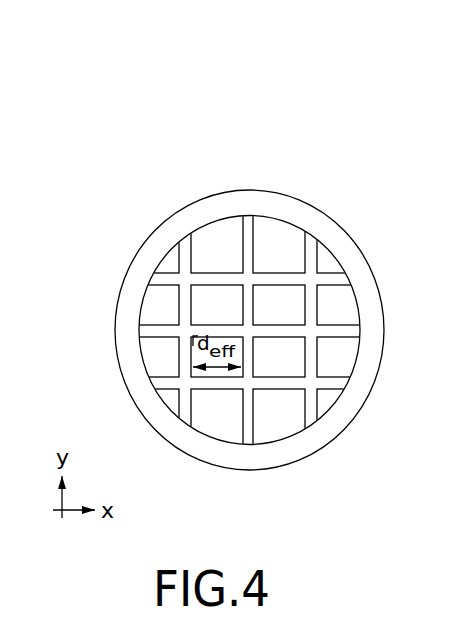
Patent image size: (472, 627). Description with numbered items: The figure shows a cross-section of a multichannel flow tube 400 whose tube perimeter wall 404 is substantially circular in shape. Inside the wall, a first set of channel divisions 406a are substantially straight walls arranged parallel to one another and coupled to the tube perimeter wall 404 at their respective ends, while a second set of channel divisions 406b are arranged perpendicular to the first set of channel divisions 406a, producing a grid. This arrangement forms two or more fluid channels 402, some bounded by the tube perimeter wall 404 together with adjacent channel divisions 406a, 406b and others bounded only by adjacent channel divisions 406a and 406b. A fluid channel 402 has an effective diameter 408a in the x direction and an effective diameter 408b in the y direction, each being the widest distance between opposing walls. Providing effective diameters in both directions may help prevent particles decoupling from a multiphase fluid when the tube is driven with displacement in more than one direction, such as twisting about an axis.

The multichannel flow tube 400 is at (180, 110).
The fluid channel 402 is at (187, 343).
The tube perimeter wall 404 is at (345, 237).
The first set of channel divisions 406a is at (252, 221).
The second set of channel divisions 406b is at (152, 282).
The effective diameter in the first direction 408a is at (190, 368).
The effective diameter in the second direction 408b is at (212, 318).